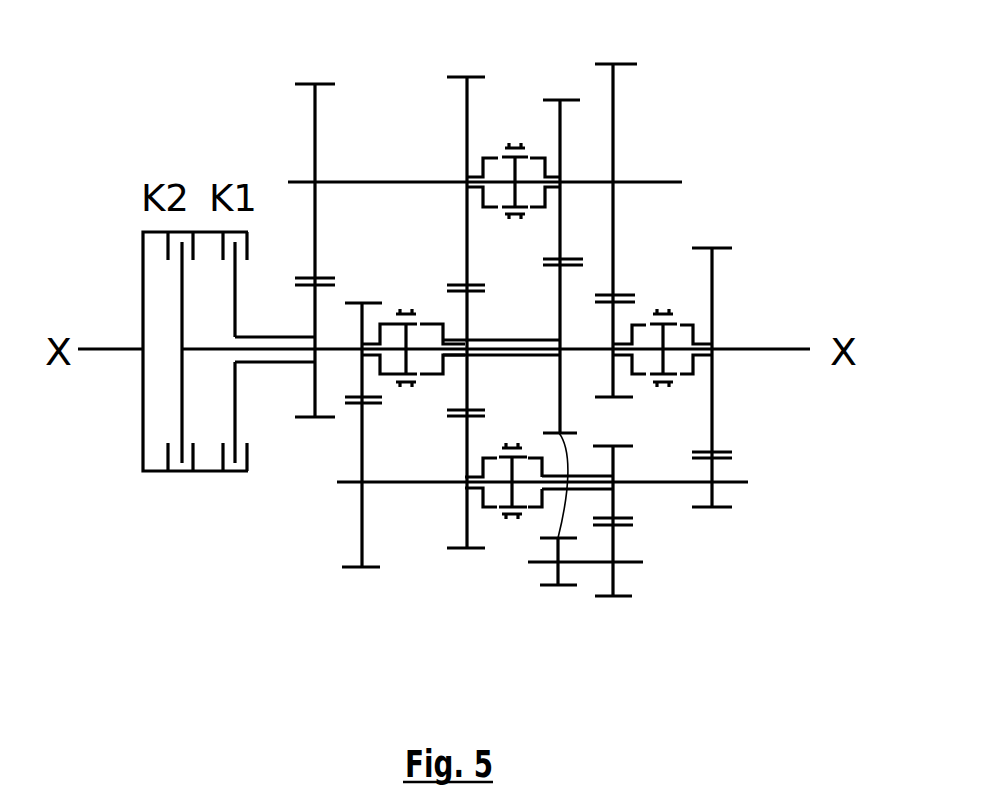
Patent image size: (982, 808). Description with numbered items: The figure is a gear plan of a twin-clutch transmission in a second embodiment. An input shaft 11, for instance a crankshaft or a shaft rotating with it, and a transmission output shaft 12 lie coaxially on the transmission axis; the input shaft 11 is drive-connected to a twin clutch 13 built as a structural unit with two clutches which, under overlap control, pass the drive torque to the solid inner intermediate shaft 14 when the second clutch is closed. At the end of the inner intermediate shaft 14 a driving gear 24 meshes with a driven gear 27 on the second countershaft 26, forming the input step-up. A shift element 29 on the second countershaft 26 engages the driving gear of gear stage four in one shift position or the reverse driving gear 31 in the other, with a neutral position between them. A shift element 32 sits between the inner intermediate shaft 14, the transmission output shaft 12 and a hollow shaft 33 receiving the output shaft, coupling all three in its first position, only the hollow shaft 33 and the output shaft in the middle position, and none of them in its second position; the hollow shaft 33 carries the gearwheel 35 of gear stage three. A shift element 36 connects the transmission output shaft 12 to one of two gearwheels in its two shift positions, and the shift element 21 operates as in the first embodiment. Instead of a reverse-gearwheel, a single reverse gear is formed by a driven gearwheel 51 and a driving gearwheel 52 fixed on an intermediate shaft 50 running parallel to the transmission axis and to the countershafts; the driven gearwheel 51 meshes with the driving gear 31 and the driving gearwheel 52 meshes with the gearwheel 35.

The input shaft 11 is at (110, 355).
The transmission output shaft 12 is at (747, 347).
The twin clutch 13 is at (138, 488).
The intermediate shaft 14 is at (261, 351).
The shift element 21 is at (515, 130).
The driving gear 24 is at (356, 318).
The second countershaft 26 is at (405, 487).
The driven gear 27 is at (355, 530).
The shift element 29 is at (510, 523).
The driving gear 31 is at (613, 502).
The shift element 32 is at (408, 390).
The hollow shaft 33 is at (503, 355).
The gearwheel 35 is at (560, 310).
The shift element 36 is at (664, 303).
The intermediate shaft 50 is at (638, 563).
The driven gearwheel 51 is at (613, 580).
The driving gearwheel 52 is at (578, 577).